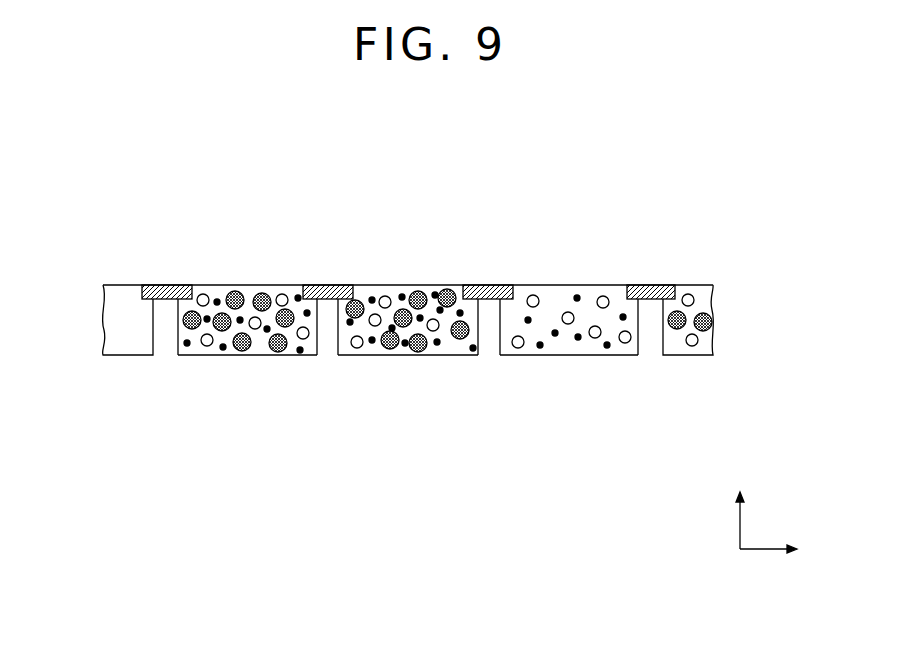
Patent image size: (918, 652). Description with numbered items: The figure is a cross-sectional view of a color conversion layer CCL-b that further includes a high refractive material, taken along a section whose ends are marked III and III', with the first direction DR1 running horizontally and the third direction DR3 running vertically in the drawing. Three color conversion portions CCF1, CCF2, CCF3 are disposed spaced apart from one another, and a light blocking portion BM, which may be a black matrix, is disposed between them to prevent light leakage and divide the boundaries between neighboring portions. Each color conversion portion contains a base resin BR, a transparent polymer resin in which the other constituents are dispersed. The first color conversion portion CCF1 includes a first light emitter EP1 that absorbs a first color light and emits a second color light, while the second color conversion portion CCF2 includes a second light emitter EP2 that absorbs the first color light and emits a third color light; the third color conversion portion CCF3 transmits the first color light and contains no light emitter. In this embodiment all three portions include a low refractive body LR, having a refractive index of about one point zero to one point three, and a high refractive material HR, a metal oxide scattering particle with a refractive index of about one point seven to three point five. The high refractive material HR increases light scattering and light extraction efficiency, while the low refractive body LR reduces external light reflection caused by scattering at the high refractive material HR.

The color conversion layer CCL-b is at (606, 164).
The first color conversion portion CCF1 is at (249, 285).
The second color conversion portion CCF2 is at (405, 285).
The third color conversion portion CCF3 is at (567, 285).
The light blocking portion BM is at (323, 287).
The low refractive body LR is at (203, 348).
The first light emitter EP1 is at (241, 350).
The second light emitter EP2 is at (390, 348).
The base resin BR is at (264, 350).
The high refractive material HR is at (299, 352).
The section line mark III is at (104, 374).
The section line mark III' is at (716, 374).
The first direction DR1 is at (788, 552).
The third direction DR3 is at (740, 510).